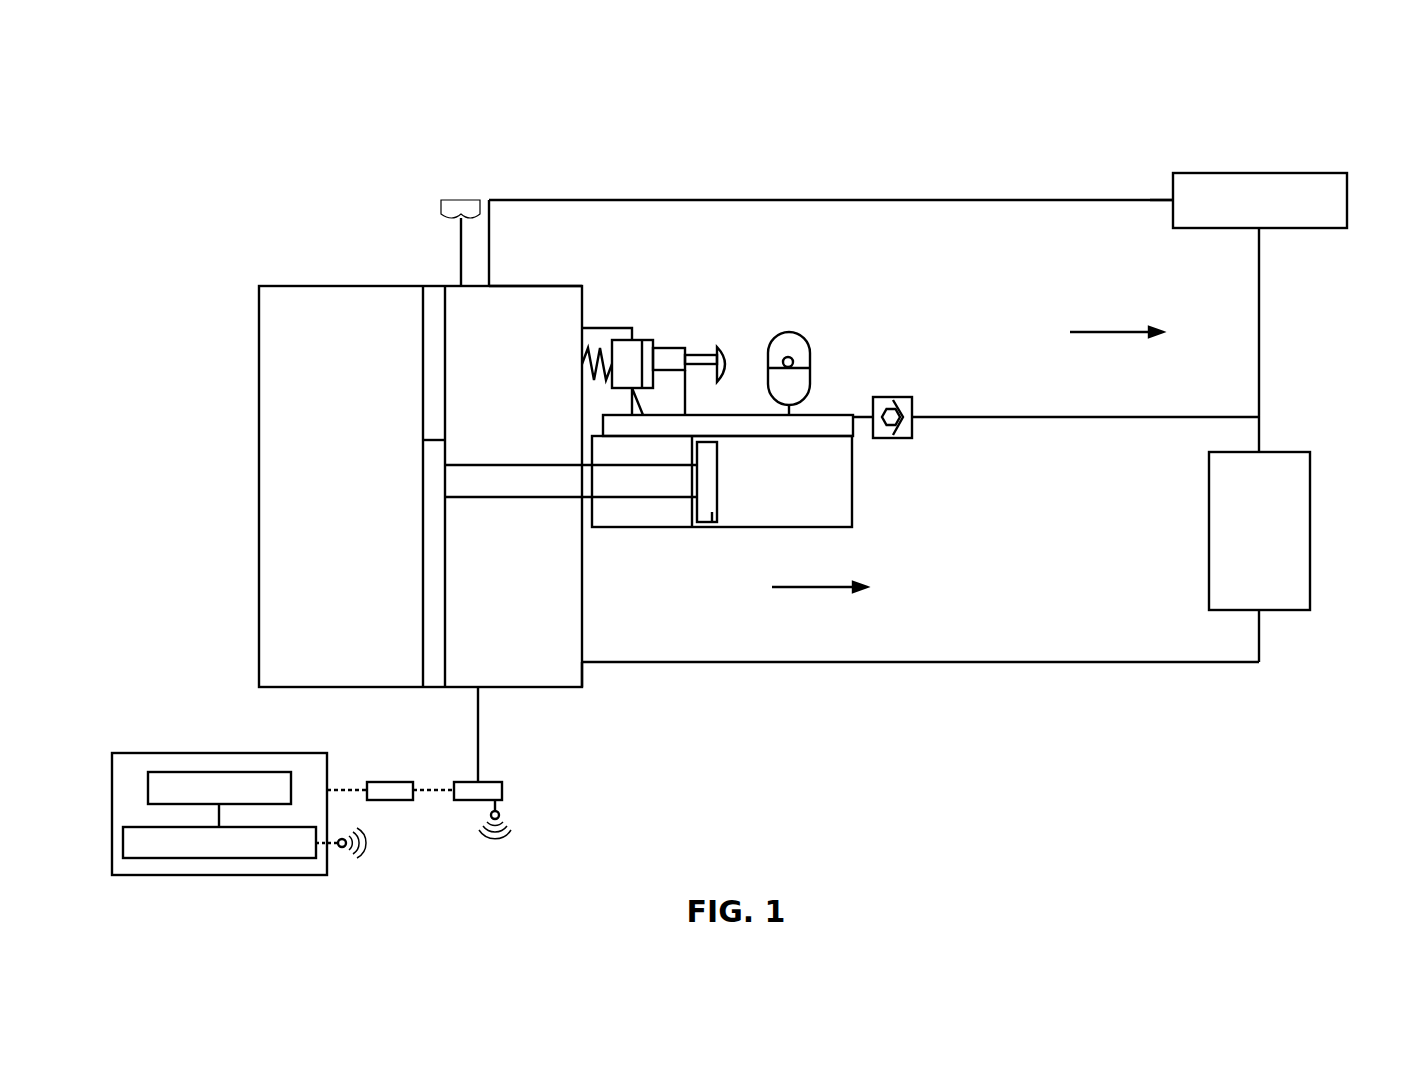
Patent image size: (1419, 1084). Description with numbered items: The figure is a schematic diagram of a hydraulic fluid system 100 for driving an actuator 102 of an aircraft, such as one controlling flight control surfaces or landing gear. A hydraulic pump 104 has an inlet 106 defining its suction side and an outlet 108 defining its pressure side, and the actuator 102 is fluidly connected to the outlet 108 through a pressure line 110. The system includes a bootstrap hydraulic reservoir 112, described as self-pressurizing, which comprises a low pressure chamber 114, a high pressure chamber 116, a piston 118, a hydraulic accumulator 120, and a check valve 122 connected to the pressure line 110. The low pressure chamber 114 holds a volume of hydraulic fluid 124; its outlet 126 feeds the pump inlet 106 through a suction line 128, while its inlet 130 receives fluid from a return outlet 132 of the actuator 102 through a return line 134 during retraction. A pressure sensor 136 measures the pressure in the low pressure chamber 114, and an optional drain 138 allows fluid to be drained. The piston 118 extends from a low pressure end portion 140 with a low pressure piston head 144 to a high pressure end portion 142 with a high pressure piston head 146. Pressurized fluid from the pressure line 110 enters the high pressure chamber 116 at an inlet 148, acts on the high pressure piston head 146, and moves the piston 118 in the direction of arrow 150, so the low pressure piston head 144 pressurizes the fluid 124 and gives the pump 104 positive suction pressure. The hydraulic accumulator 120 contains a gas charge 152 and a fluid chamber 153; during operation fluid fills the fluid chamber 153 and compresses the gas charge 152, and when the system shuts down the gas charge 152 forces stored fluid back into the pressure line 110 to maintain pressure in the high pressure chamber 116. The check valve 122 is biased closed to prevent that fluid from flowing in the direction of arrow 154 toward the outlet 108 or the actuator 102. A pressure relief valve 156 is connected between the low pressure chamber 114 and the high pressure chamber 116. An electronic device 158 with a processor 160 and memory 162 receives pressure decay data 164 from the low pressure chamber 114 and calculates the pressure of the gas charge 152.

The hydraulic fluid system 100 is at (1212, 107).
The actuator 102 is at (1313, 173).
The hydraulic pump 104 is at (1310, 487).
The inlet 106 is at (1259, 612).
The outlet 108 is at (1259, 452).
The pressure line 110 is at (838, 415).
The bootstrap hydraulic reservoir 112 is at (432, 275).
The low pressure chamber 114 is at (340, 690).
The high pressure chamber 116 is at (668, 528).
The piston 118 is at (612, 500).
The hydraulic accumulator 120 is at (773, 338).
The check valve 122 is at (893, 397).
The volume of hydraulic fluid 124 is at (498, 668).
The outlet 126 is at (582, 662).
The suction line 128 is at (857, 662).
The inlet 130 is at (490, 287).
The return outlet 132 is at (1173, 200).
The return line 134 is at (822, 200).
The pressure sensor 136 is at (470, 800).
The drain 138 is at (461, 240).
The low pressure end portion 140 is at (392, 535).
The high pressure end portion 142 is at (692, 552).
The low pressure piston head 144 is at (437, 440).
The high pressure piston head 146 is at (712, 512).
The inlet 148 is at (602, 437).
The arrow 150 is at (823, 585).
The gas charge 152 is at (787, 348).
The fluid chamber 153 is at (795, 388).
The arrow 154 is at (1113, 330).
The pressure relief valve 156 is at (647, 327).
The electronic device 158 is at (168, 875).
The processor 160 is at (219, 858).
The memory 162 is at (219, 772).
The pressure decay data 164 is at (402, 800).